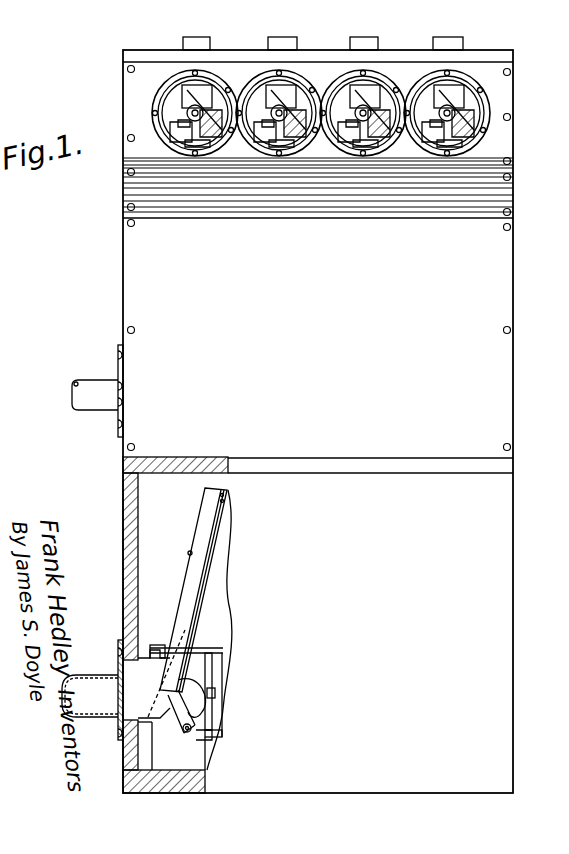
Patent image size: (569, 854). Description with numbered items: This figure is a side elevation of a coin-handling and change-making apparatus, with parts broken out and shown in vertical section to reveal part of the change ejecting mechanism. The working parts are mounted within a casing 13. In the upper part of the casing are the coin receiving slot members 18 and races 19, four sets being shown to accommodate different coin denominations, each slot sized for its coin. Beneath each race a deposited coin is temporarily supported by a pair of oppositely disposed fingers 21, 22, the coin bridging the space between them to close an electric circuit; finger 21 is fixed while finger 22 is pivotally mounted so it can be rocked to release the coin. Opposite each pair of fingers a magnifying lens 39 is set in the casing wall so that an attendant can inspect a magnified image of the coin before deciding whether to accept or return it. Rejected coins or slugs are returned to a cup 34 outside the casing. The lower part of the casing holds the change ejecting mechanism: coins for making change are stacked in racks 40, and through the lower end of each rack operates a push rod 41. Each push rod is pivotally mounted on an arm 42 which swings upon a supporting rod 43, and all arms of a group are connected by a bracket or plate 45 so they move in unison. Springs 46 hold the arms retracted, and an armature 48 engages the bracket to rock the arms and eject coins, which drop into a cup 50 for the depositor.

The casing 13 is at (488, 290).
The coin receiving slot members 18 is at (211, 44).
The races 19 is at (210, 90).
The fixed finger 21 is at (172, 120).
The pivoted finger 22 is at (273, 142).
The cup 34 is at (93, 388).
The magnifying lens 39 is at (302, 98).
The chutes or racks 40 is at (208, 560).
The push rod 41 is at (223, 652).
The arm 42 is at (212, 670).
The supporting rod 43 is at (183, 731).
The bracket or plate 45 is at (201, 742).
The spring 46 is at (212, 697).
The armature 48 is at (197, 683).
The cup 50 is at (90, 684).